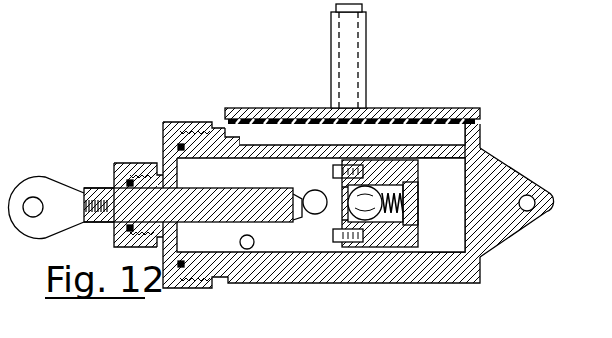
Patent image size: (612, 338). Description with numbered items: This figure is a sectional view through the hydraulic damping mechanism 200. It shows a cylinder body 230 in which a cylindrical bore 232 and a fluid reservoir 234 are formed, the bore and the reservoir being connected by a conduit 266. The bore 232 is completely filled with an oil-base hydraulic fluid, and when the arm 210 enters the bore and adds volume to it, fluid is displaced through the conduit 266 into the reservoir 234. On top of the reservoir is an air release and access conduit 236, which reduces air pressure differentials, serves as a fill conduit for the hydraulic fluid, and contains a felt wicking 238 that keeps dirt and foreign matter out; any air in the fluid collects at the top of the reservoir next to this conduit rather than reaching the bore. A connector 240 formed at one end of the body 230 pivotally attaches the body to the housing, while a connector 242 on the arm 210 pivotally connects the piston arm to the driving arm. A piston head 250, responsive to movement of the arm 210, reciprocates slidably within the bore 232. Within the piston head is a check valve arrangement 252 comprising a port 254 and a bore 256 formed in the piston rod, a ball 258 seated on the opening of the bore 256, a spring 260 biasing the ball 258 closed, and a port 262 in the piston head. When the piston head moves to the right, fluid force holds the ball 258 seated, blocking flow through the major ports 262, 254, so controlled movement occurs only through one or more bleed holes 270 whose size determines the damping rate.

The damping mechanism 200 is at (471, 99).
The arm 210 is at (88, 187).
The cylinder body 230 is at (260, 284).
The cylindrical bore 232 is at (445, 254).
The fluid reservoir 234 is at (410, 115).
The air release and access conduit 236 is at (367, 62).
The felt wicking 238 is at (362, 6).
The connector 240 is at (503, 143).
The connector 242 is at (20, 152).
The piston head 250 is at (330, 162).
The check valve arrangement 252 is at (306, 214).
The port 254 is at (300, 195).
The bore 256 is at (306, 224).
The ball 258 is at (387, 212).
The spring 260 is at (401, 205).
The port 262 is at (403, 183).
The conduit 266 is at (240, 241).
The bleed holes 270 is at (340, 208).